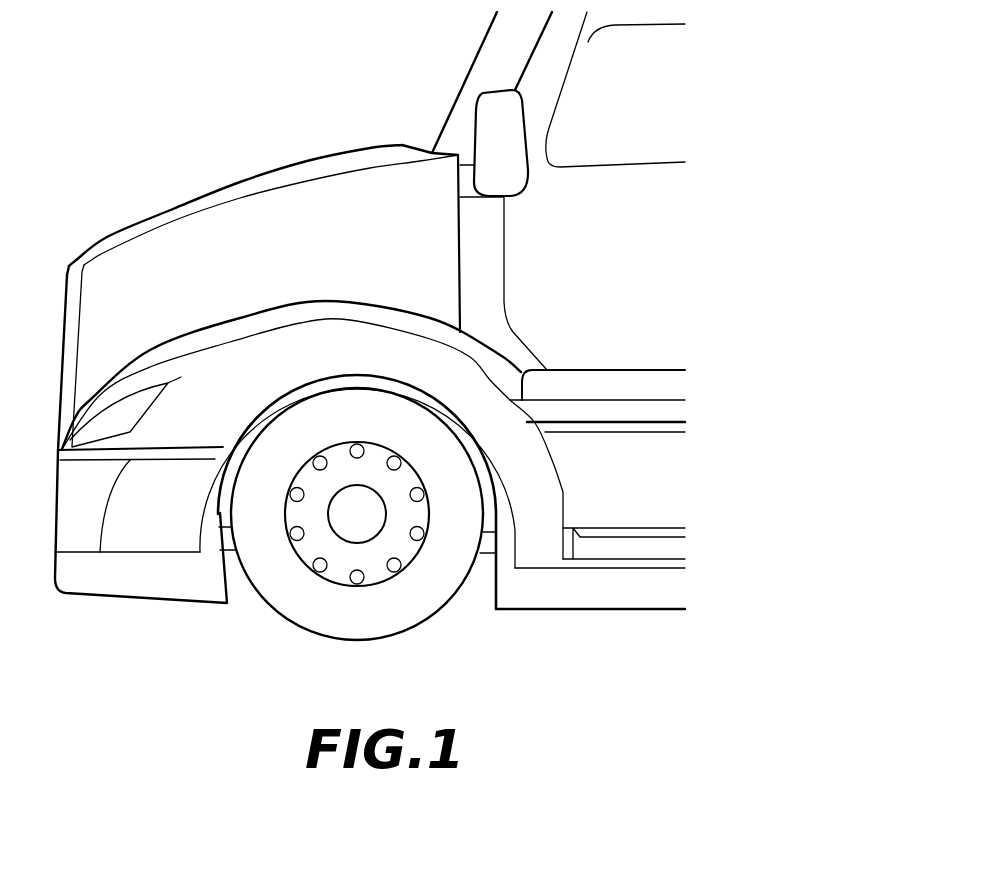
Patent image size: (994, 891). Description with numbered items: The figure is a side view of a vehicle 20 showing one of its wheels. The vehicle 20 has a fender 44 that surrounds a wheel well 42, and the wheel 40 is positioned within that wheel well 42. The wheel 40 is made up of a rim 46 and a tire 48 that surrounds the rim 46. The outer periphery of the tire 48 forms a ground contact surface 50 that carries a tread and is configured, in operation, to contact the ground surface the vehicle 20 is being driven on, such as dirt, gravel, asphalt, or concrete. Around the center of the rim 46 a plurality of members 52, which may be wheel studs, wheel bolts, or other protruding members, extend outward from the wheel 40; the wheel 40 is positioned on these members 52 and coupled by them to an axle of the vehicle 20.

The vehicle 20 is at (396, 110).
The wheel 40 is at (308, 605).
The wheel well 42 is at (220, 509).
The fender 44 is at (309, 337).
The rim 46 is at (388, 585).
The tire 48 is at (453, 565).
The ground contact surface 50 is at (349, 650).
The plurality of members 52 is at (293, 494).